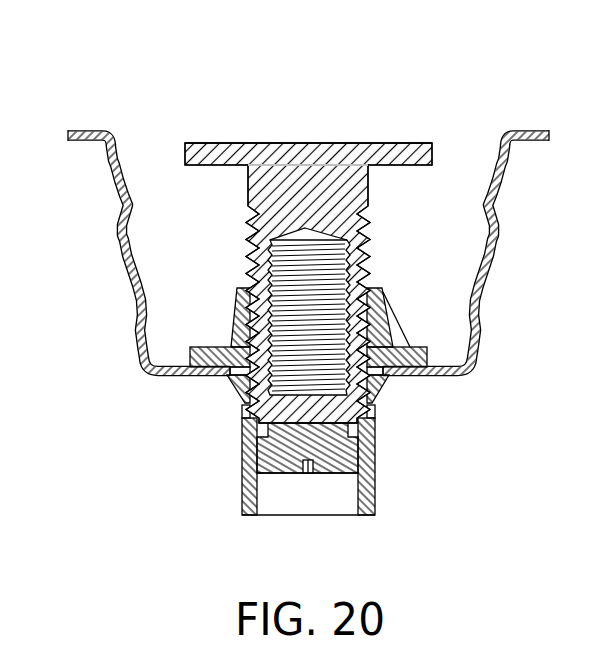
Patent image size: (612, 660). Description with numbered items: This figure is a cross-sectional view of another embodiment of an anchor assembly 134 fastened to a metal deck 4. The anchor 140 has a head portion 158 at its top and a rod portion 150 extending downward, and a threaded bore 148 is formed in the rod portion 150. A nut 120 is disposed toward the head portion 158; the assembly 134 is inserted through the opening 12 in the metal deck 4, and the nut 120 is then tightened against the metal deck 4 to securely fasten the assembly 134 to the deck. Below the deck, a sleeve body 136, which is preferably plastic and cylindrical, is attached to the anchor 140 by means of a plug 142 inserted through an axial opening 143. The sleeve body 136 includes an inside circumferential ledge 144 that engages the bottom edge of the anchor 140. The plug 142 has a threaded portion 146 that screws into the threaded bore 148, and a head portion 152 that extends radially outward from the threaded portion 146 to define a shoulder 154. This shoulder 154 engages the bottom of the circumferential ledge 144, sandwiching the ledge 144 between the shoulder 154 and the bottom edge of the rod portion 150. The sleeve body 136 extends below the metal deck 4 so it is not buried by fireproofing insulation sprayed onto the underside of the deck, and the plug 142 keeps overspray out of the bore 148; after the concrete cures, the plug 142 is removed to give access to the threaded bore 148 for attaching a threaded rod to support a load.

The metal deck 4 is at (80, 131).
The opening 12 is at (427, 350).
The nut 120 is at (393, 302).
The anchor assembly 134 is at (308, 224).
The sleeve body 136 is at (299, 491).
The anchor 140 is at (245, 134).
The plug 142 is at (234, 455).
The axial opening 143 is at (268, 513).
The inside circumferential ledge 144 is at (378, 429).
The threaded portion 146 is at (243, 402).
The threaded bore 148 is at (335, 258).
The rod portion 150 is at (248, 214).
The head portion 152 is at (338, 462).
The shoulder 154 is at (378, 449).
The head portion 158 is at (393, 143).